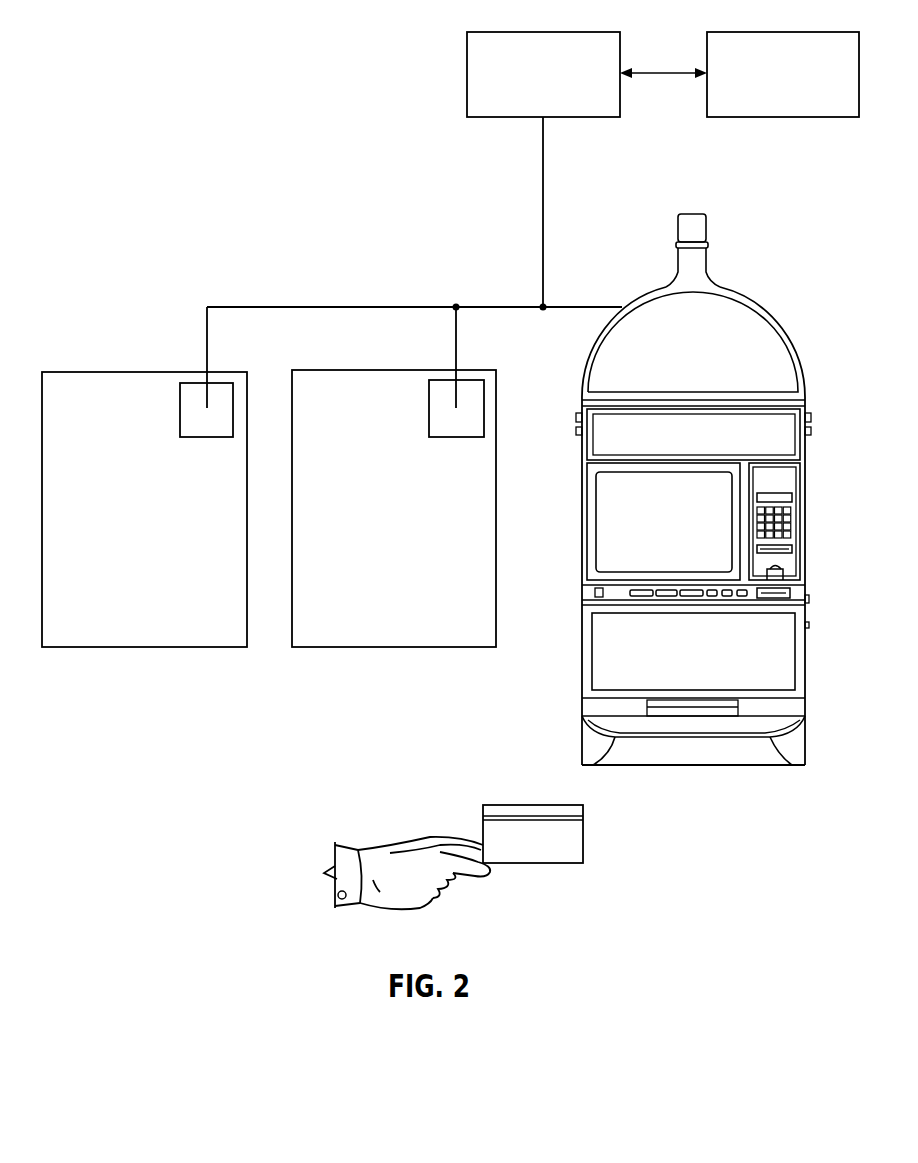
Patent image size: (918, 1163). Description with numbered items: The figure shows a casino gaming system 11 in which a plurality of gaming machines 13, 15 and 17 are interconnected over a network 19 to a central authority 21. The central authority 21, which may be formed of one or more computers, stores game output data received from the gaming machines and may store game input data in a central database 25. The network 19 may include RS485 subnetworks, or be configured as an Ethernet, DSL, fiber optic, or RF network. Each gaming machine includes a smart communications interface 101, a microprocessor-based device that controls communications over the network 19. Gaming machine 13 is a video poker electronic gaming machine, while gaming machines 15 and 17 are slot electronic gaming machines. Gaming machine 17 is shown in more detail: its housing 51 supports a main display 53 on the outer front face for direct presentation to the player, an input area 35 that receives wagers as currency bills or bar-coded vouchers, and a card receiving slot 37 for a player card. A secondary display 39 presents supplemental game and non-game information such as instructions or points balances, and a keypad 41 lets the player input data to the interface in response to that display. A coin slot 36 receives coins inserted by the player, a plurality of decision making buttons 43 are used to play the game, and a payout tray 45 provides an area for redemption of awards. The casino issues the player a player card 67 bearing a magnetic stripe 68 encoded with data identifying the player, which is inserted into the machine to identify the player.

The gaming system 11 is at (120, 46).
The central authority 21 is at (565, 32).
The central database 25 is at (805, 32).
The network 19 is at (543, 212).
The gaming machine 13 is at (90, 372).
The gaming machine 15 is at (340, 370).
The smart communications interface 101 is at (180, 408).
The gaming machine 17 is at (786, 300).
The housing 51 is at (800, 362).
The main display 53 is at (604, 528).
The secondary display 39 is at (795, 497).
The keypad 41 is at (802, 519).
The card receiving slot 37 is at (795, 549).
The coin slot 36 is at (790, 572).
The input area 35 is at (805, 598).
The decision making buttons 43 is at (695, 588).
The payout tray 45 is at (805, 740).
The player card 67 is at (539, 805).
The magnetic stripe 68 is at (583, 818).